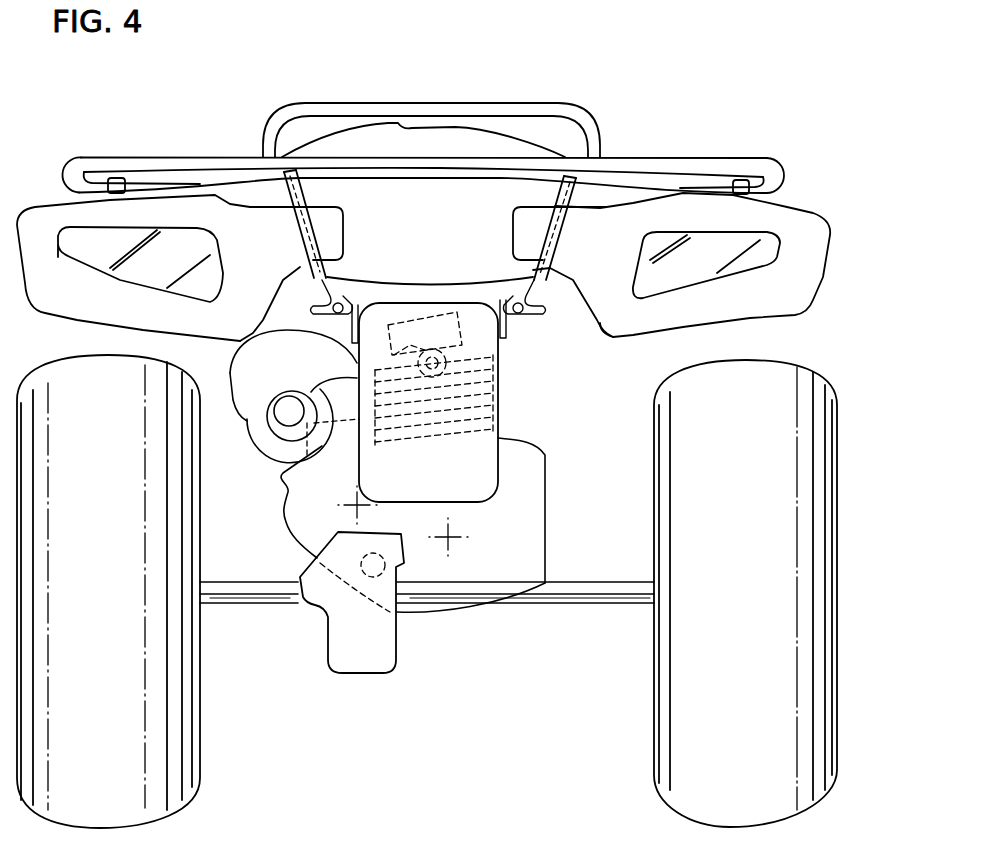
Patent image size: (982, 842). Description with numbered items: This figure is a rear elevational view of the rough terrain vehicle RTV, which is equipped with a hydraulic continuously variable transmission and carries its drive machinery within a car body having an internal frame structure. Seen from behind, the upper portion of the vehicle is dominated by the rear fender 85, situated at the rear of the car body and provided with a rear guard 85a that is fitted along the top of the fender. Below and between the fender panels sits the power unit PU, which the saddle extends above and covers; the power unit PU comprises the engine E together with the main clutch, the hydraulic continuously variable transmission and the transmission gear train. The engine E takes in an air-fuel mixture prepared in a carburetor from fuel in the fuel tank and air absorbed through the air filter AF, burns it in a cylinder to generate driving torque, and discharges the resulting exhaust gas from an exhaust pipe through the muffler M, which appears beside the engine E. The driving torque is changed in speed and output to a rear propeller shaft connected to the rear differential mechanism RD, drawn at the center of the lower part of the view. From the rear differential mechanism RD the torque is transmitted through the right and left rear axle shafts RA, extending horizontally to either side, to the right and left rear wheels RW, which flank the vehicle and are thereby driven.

The rear fender 85 is at (510, 197).
The rear guard 85a is at (712, 167).
The rough terrain vehicle RTV is at (827, 172).
The rear wheels RW is at (776, 389).
The engine E is at (500, 376).
The power unit PU is at (533, 442).
The air filter AF is at (477, 483).
The muffler M is at (270, 440).
The rear axle shafts RA is at (242, 603).
The rear differential mechanism RD is at (380, 662).